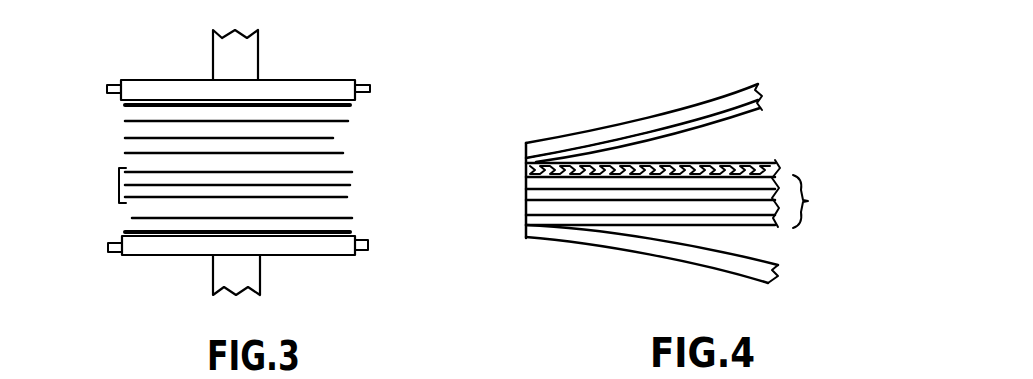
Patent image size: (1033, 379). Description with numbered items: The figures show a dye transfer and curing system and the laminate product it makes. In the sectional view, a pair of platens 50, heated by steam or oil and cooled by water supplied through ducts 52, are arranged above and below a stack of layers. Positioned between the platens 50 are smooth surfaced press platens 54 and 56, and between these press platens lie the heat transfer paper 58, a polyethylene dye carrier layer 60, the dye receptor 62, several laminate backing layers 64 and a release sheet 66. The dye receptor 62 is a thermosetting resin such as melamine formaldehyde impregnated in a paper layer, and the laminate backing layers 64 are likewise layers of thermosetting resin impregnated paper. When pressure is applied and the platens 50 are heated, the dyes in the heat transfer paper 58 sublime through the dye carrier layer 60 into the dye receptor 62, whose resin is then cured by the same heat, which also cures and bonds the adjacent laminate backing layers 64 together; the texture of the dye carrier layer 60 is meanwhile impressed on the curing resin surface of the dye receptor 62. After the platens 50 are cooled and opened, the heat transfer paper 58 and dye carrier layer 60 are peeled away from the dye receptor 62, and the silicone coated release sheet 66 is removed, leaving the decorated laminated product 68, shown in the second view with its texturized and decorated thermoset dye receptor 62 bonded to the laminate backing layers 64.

In FIG. 3, the platens 50 is at (138, 90).
In FIG. 3, the ducts 52 is at (378, 263).
In FIG. 3, the smooth surfaced press platen 54 is at (125, 104).
In FIG. 3, the smooth surfaced press platen 56 is at (350, 233).
In FIG. 3, the heat transfer paper 58 is at (125, 122).
In FIG. 4, the heat transfer paper 58 is at (740, 95).
In FIG. 3, the polyethylene dye carrier layer 60 is at (333, 138).
In FIG. 4, the polyethylene dye carrier layer 60 is at (758, 108).
In FIG. 3, the dye receptor 62 is at (343, 153).
In FIG. 4, the dye receptor 62 is at (775, 160).
In FIG. 3, the laminate backing layers 64 is at (118, 185).
In FIG. 4, the laminate backing layers 64 is at (808, 201).
In FIG. 3, the release sheet 66 is at (352, 218).
In FIG. 4, the release sheet 66 is at (652, 274).
In FIG. 4, the decorated laminated product 68 is at (752, 233).